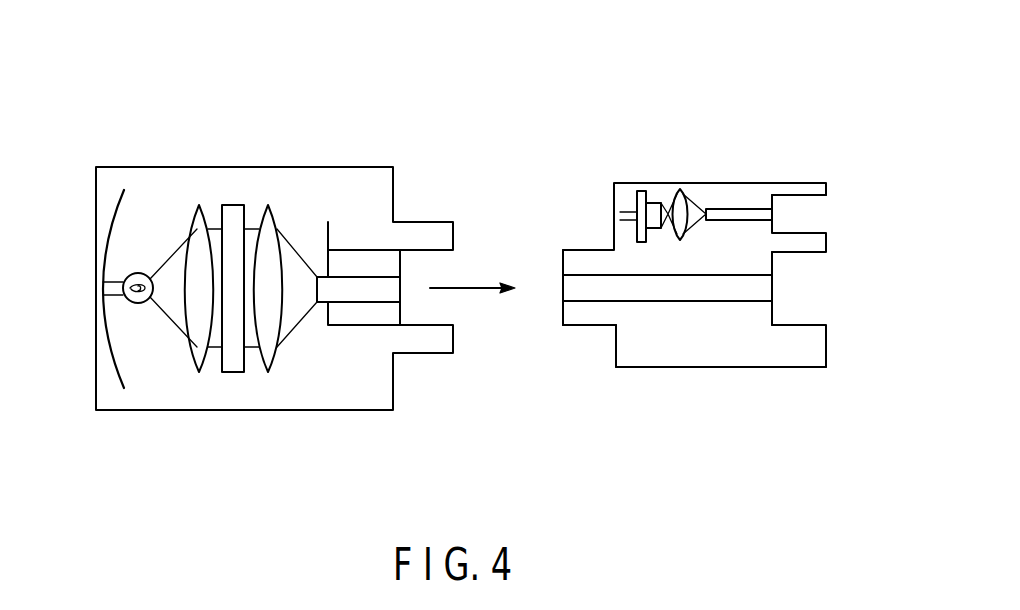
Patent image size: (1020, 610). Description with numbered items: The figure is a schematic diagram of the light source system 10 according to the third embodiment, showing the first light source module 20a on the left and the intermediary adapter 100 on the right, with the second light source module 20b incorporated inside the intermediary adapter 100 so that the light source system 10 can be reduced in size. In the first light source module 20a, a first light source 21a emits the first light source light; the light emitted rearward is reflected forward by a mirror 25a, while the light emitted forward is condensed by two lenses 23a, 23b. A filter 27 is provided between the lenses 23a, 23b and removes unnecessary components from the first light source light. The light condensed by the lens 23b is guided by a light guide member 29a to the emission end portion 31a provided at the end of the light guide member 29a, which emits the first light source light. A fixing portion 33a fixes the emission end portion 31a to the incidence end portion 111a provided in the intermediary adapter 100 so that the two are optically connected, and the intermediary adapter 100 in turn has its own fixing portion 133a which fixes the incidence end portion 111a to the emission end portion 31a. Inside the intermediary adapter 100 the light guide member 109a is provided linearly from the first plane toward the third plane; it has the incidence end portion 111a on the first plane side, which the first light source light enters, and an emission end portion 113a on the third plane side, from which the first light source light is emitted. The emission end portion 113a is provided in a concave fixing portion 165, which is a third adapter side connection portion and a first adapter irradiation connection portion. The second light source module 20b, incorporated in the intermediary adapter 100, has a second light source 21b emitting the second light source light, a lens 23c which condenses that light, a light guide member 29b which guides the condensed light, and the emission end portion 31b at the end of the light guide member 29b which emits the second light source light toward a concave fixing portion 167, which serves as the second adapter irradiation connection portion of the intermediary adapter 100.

The light source system 10 is at (521, 92).
The first light source module 20a is at (354, 113).
The second light source module 20b is at (692, 170).
The first light source 21a is at (140, 303).
The second light source 21b is at (655, 195).
The lens 23a is at (197, 205).
The lens 23b is at (270, 205).
The lens 23c is at (680, 190).
The mirror 25a is at (108, 238).
The filter 27 is at (233, 205).
The light guide member 29a is at (345, 293).
The light guide member 29b is at (740, 209).
The emission end portion 31a is at (392, 292).
The emission end portion 31b is at (772, 215).
The fixing portion 33a is at (425, 353).
The intermediary adapter 100 is at (734, 447).
The light guide member 109a is at (675, 290).
The incidence end portion 111a is at (563, 297).
The emission end portion 113a is at (772, 290).
The fixing portion 133a is at (581, 325).
The concave fixing portion 165 is at (806, 358).
The concave fixing portion 167 is at (803, 184).